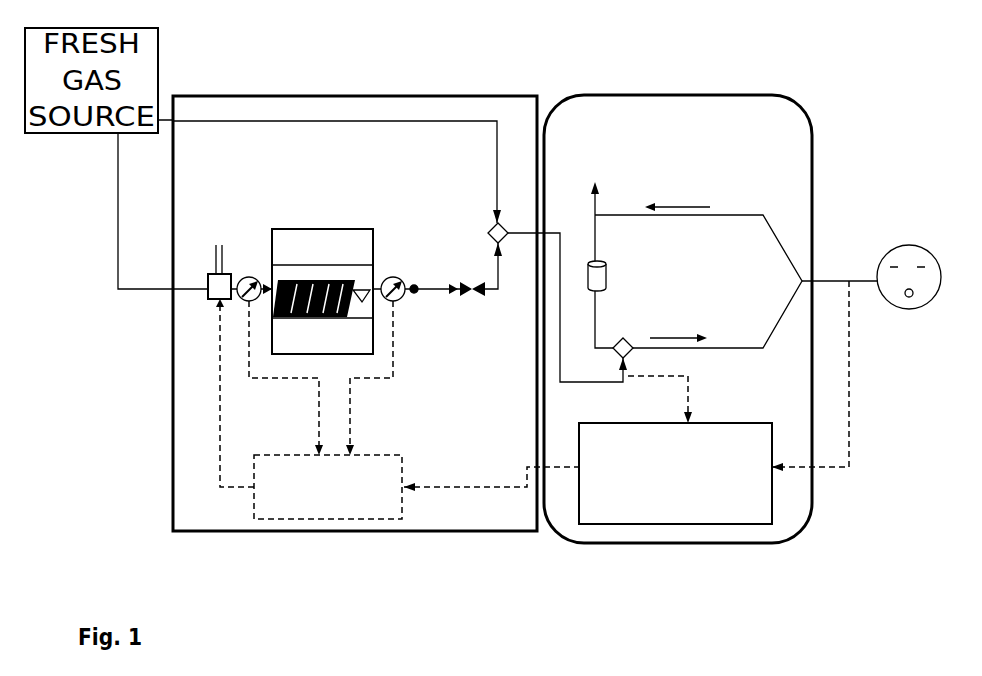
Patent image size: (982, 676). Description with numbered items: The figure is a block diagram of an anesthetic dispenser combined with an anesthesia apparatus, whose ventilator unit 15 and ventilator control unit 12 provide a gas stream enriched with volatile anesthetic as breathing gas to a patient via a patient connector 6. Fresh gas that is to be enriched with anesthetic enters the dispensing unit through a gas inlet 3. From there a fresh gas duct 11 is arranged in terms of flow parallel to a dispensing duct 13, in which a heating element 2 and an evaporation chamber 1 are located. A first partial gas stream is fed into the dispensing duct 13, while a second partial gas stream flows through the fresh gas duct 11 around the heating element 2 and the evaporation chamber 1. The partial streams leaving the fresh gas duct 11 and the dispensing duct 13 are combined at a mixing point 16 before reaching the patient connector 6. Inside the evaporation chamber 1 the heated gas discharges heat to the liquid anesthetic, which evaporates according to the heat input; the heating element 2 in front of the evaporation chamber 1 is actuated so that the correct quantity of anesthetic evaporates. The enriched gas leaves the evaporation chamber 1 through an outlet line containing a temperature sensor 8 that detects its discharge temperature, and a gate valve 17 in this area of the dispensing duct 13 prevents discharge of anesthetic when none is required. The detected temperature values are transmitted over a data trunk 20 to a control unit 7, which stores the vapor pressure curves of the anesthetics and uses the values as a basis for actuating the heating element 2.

The evaporation chamber 1 is at (372, 220).
The heating element 2 is at (229, 272).
The gas inlet 3 is at (115, 142).
The patient connector 6 is at (849, 281).
The control unit 7 is at (404, 467).
The temperature sensor 8 is at (401, 280).
The fresh gas duct 11 is at (330, 122).
The ventilator control unit 12 is at (772, 423).
The dispensing duct 13 is at (183, 290).
The ventilator unit 15 is at (607, 275).
The mixing point 16 is at (498, 222).
The gate valve 17 is at (472, 296).
The data trunk 20 is at (352, 398).